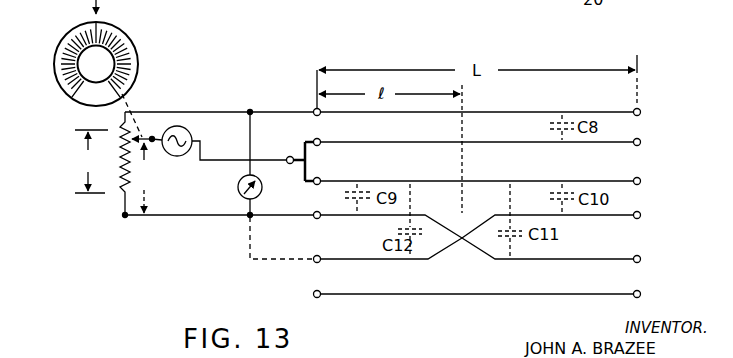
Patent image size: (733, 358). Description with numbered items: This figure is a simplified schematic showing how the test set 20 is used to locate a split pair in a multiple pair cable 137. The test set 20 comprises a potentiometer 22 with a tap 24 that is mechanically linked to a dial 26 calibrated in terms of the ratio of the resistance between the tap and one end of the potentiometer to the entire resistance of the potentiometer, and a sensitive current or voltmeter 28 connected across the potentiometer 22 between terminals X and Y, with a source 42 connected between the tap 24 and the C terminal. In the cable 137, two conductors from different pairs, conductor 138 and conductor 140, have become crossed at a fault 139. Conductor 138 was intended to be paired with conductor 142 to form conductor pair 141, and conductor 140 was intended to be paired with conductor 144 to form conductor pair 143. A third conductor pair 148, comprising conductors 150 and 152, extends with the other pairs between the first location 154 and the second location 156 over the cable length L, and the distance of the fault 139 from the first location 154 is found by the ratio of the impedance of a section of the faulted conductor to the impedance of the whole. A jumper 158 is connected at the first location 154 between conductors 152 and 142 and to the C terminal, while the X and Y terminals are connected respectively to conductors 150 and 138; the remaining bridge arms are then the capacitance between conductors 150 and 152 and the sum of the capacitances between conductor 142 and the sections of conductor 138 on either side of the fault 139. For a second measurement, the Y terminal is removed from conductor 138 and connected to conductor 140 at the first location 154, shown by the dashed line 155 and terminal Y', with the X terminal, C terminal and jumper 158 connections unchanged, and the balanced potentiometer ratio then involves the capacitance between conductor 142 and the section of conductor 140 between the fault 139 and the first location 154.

The test set 20 is at (150, 224).
The potentiometer 22 is at (120, 186).
The tap 24 is at (151, 135).
The dial 26 is at (139, 64).
The meter 28 is at (238, 184).
The alternating current source 42 is at (189, 133).
The cable 137 is at (254, 273).
The conductor 138 is at (384, 218).
The fault 139 is at (462, 245).
The conductor 140 is at (375, 261).
The conductor pair 141 is at (311, 204).
The conductor 142 is at (580, 181).
The conductor pair 143 is at (312, 282).
The conductor 144 is at (492, 295).
The third conductor pair 148 is at (647, 130).
The conductor 150 is at (553, 112).
The conductor 152 is at (522, 142).
The first location 154 is at (310, 107).
The dashed line 155 is at (248, 237).
The second location 156 is at (652, 194).
The jumper 158 is at (310, 153).